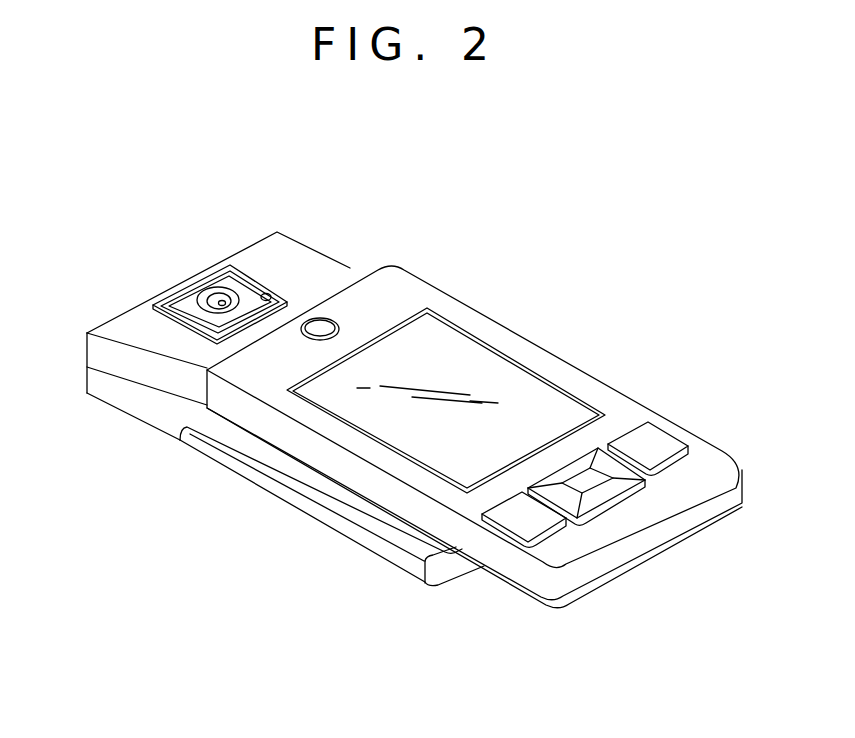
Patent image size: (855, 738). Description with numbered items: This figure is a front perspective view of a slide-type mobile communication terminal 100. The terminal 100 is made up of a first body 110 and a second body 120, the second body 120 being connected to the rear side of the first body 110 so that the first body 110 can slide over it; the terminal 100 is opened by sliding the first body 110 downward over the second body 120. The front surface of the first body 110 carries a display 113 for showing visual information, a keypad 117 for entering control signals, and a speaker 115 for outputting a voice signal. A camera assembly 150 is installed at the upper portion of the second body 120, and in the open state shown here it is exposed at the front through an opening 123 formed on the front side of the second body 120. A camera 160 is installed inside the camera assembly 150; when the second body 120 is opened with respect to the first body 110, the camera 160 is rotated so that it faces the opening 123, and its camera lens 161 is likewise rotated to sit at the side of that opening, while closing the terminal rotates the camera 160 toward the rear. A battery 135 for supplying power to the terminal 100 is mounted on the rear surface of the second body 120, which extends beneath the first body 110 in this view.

The mobile communication terminal 100 is at (604, 250).
The first body 110 is at (624, 589).
The display 113 is at (460, 357).
The speaker 115 is at (321, 326).
The keypad 117 is at (637, 437).
The second body 120 is at (450, 588).
The opening 123 is at (266, 293).
The battery 135 is at (250, 470).
The camera assembly 150 is at (214, 285).
The camera 160 is at (203, 298).
The camera lens 161 is at (210, 291).